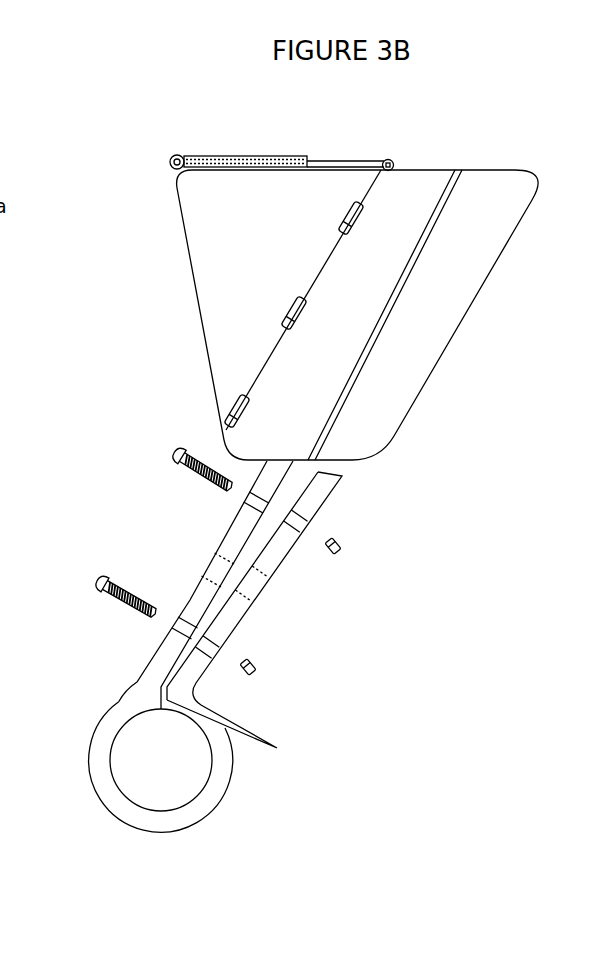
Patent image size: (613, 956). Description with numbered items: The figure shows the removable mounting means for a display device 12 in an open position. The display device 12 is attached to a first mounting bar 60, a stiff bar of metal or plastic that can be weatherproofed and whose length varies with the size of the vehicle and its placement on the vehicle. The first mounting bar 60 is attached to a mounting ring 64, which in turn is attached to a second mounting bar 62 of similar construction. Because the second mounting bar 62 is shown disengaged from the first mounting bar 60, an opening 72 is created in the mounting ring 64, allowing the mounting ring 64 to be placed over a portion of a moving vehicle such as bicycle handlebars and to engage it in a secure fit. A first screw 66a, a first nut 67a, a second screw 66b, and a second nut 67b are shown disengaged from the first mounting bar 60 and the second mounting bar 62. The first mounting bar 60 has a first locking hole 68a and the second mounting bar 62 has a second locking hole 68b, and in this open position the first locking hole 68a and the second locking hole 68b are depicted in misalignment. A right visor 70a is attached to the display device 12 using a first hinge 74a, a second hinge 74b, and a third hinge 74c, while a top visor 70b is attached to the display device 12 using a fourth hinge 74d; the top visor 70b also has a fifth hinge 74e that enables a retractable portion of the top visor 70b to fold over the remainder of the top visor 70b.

The display device 12 is at (420, 313).
The first mounting bar 60 is at (168, 649).
The second mounting bar 62 is at (199, 669).
The mounting ring 64 is at (163, 826).
The first screw 66a is at (176, 452).
The second screw 66b is at (99, 582).
The first nut 67a is at (343, 542).
The second nut 67b is at (257, 662).
The first locking hole 68a is at (220, 562).
The second locking hole 68b is at (258, 578).
The right visor 70a is at (197, 190).
The top visor 70b is at (276, 156).
The opening 72 is at (276, 749).
The first hinge 74a is at (358, 219).
The second hinge 74b is at (290, 311).
The third hinge 74c is at (233, 408).
The fourth hinge 74d is at (389, 160).
The fifth hinge 74e is at (178, 155).